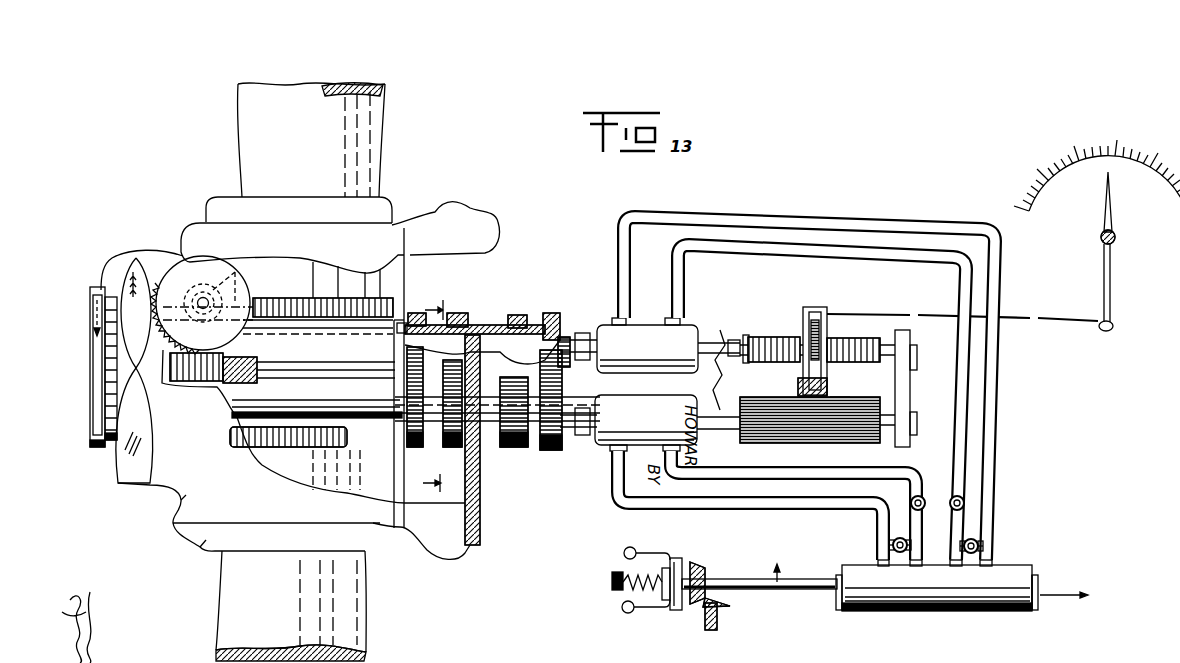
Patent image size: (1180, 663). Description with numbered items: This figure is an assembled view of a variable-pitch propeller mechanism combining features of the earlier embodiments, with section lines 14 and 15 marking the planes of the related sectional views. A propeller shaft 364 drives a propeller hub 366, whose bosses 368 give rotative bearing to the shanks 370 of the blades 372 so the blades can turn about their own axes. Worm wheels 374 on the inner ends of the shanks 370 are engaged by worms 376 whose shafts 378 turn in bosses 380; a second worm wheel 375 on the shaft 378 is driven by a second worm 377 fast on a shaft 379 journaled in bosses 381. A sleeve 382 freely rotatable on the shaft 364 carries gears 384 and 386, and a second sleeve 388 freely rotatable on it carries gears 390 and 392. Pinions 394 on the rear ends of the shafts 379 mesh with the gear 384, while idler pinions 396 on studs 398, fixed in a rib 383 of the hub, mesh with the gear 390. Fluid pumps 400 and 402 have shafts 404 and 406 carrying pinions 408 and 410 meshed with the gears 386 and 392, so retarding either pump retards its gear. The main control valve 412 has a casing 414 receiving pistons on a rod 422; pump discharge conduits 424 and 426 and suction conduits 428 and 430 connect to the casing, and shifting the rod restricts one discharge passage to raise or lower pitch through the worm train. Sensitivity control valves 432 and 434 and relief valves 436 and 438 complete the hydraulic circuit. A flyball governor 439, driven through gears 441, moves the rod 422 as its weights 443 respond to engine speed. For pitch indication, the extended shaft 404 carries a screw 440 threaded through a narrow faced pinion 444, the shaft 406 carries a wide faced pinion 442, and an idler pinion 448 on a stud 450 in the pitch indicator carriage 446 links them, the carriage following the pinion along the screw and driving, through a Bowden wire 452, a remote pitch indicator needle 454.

The section line 14- 14 is at (939, 573).
The section line 15- 15 is at (420, 482).
The propeller shaft 364 is at (232, 415).
The propeller hub 366 is at (183, 498).
The bosses 368 is at (207, 543).
The shanks 370 is at (273, 452).
The blades 372 is at (367, 572).
The worm wheels 374 is at (298, 300).
The second worm wheel 375 is at (185, 268).
The worms 376 is at (237, 275).
The second worm 377 is at (207, 380).
The worm shafts 378 is at (206, 315).
The shaft 379 is at (305, 372).
The bosses 380 is at (168, 316).
The bosses 381 is at (258, 360).
The sleeve 382 is at (482, 353).
The rib 383 is at (480, 498).
The gear 384 is at (418, 313).
The gear 386 is at (556, 313).
The second sleeve 388 is at (515, 315).
The gear 390 is at (452, 313).
The gear 392 is at (522, 326).
The pinions 394 is at (396, 352).
The idler pinions 396 is at (440, 445).
The studs 398 is at (485, 440).
The fluid pump 400 is at (662, 325).
The fluid pump 402 is at (630, 447).
The pump shaft 404 is at (575, 340).
The pump shaft 406 is at (572, 435).
The pinion 408 is at (566, 388).
The pinion 410 is at (540, 450).
The main control valve 412 is at (943, 622).
The casing 414 is at (1006, 613).
The rod 422 is at (812, 592).
The conduit 424 is at (742, 248).
The conduit 426 is at (775, 468).
The conduit 428 is at (706, 215).
The conduit 430 is at (740, 505).
The sensitivity control valve 432 is at (955, 495).
The sensitivity control valve 434 is at (910, 502).
The relief valve 436 is at (977, 540).
The relief valve 438 is at (889, 545).
The flyball governor 439 is at (620, 616).
The screw 440 is at (748, 337).
The gears 441 is at (720, 612).
The wide faced pinion 442 is at (790, 445).
The governor weights 443 is at (630, 547).
The narrow faced pinion 444 is at (815, 310).
The pitch indicator carriage 446 is at (830, 338).
The idler pinion 448 is at (838, 397).
The stud 450 is at (798, 388).
The Bowden wire 452 is at (885, 314).
The pitch indicator needle 454 is at (1113, 290).